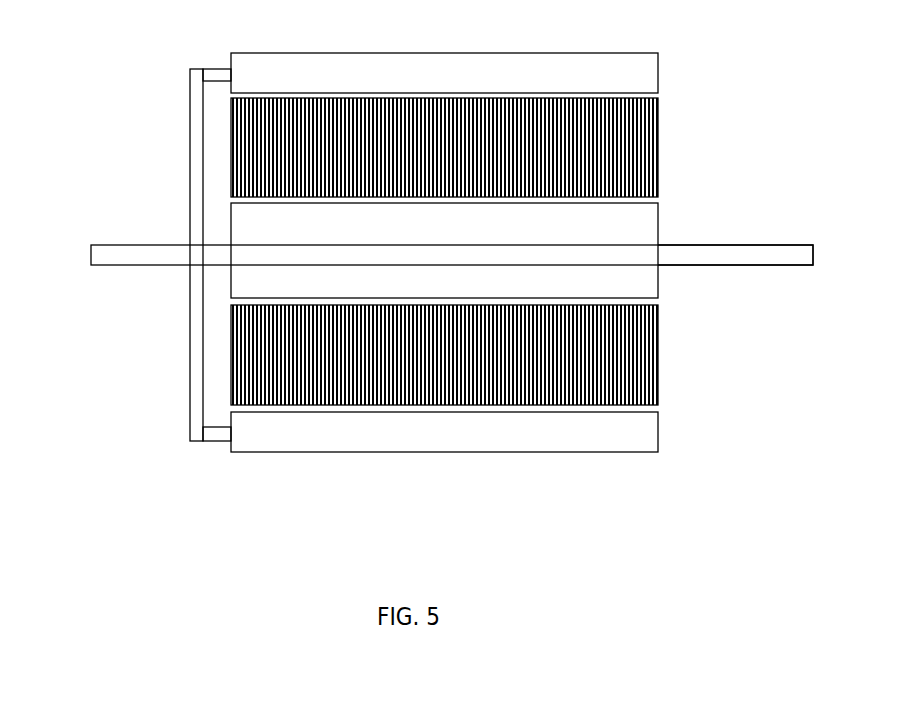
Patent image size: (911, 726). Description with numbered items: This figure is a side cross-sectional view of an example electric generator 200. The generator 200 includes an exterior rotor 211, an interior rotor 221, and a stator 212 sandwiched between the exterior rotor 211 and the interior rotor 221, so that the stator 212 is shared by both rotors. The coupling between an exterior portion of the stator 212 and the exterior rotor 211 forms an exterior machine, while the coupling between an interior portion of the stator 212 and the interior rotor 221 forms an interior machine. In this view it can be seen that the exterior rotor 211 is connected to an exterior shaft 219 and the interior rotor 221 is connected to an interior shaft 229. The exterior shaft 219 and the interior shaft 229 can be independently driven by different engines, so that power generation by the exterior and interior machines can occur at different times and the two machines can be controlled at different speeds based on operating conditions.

The electric generator 200 is at (150, 42).
The exterior rotor 211 is at (676, 72).
The stator 212 is at (676, 142).
The interior rotor 221 is at (676, 222).
The exterior shaft 219 is at (91, 245).
The interior shaft 229 is at (806, 230).